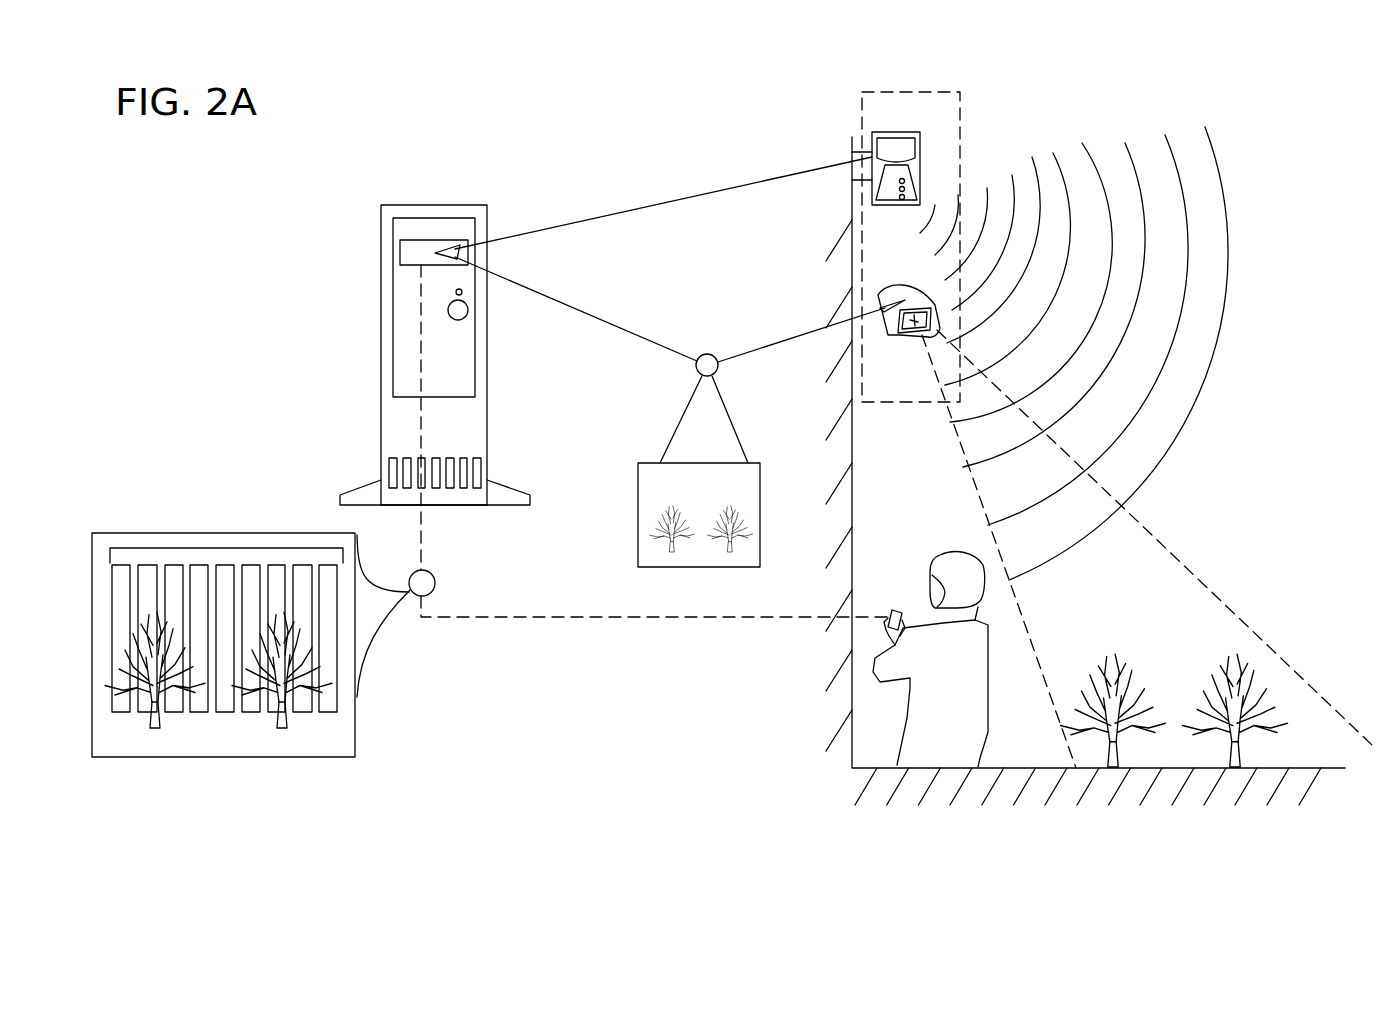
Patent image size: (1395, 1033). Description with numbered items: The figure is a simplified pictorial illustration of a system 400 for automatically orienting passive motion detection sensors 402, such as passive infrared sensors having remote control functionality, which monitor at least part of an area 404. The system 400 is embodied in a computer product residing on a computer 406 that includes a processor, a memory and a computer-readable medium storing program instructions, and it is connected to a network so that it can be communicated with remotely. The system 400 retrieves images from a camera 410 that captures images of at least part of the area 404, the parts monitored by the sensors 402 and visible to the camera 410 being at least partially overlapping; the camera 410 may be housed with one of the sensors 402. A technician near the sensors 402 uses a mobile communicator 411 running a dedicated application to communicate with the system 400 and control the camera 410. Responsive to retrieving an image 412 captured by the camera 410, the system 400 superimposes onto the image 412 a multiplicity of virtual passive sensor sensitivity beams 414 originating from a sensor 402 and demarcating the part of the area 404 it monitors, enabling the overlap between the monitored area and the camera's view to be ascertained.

The system for automatically orienting passive motion detection sensors 400 is at (413, 250).
The passive motion detection sensor 402 is at (905, 137).
The area 404 is at (1268, 250).
The computer 406 is at (433, 205).
The camera 410 is at (908, 340).
The mobile communicator 411 is at (897, 597).
The image 412 is at (705, 569).
The virtual passive sensor sensitivity beams 414 is at (215, 547).